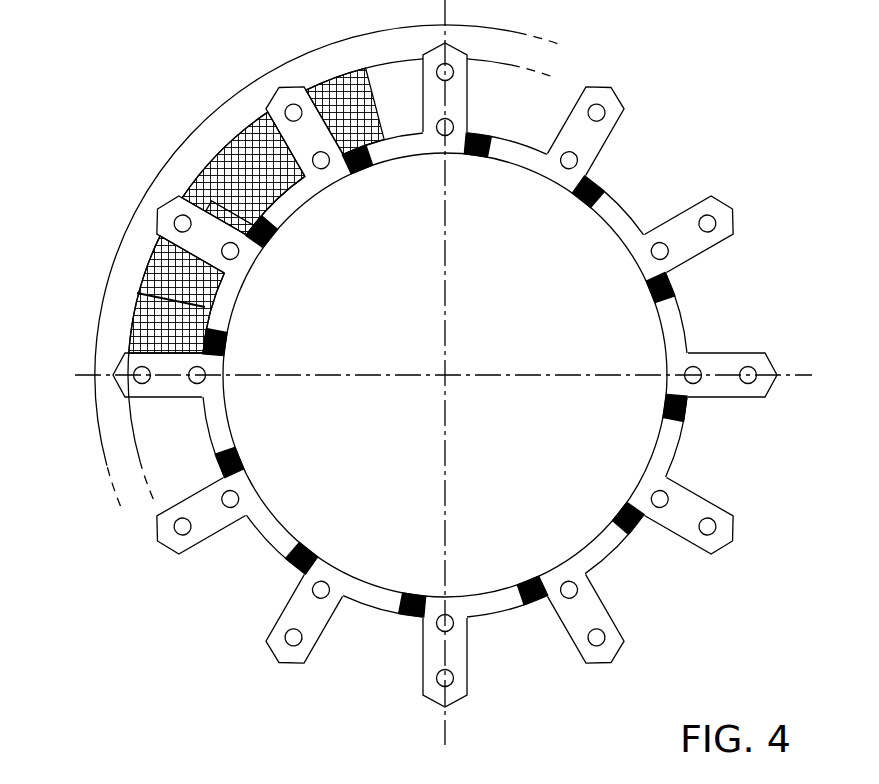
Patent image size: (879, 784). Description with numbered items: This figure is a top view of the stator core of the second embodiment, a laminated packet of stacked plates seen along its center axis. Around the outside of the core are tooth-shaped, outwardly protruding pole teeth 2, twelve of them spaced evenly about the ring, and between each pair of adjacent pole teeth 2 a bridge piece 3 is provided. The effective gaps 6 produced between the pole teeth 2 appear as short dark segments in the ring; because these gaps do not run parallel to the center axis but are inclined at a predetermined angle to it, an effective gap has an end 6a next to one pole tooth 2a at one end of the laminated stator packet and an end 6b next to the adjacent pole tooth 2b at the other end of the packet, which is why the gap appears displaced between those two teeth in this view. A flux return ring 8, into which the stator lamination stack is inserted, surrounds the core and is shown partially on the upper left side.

The pole tooth 2 is at (622, 110).
The pole tooth 2a is at (116, 380).
The adjacent pole tooth 2b is at (184, 197).
The bridge piece 3 is at (702, 403).
The effective gap 6 is at (603, 184).
The end of effective gap 6a is at (204, 328).
The end of effective gap 6b is at (185, 288).
The flux return ring 8 is at (323, 48).